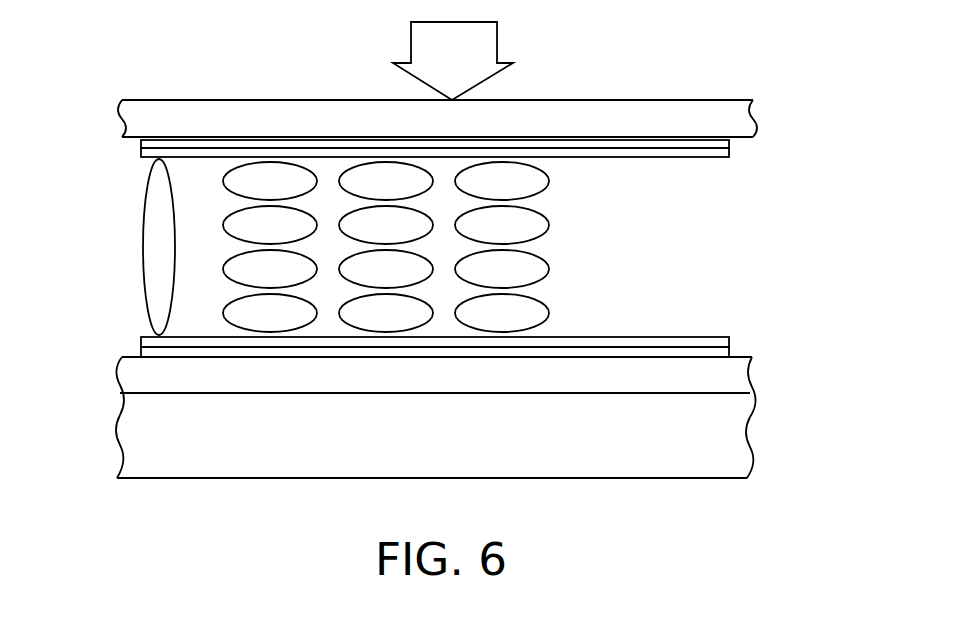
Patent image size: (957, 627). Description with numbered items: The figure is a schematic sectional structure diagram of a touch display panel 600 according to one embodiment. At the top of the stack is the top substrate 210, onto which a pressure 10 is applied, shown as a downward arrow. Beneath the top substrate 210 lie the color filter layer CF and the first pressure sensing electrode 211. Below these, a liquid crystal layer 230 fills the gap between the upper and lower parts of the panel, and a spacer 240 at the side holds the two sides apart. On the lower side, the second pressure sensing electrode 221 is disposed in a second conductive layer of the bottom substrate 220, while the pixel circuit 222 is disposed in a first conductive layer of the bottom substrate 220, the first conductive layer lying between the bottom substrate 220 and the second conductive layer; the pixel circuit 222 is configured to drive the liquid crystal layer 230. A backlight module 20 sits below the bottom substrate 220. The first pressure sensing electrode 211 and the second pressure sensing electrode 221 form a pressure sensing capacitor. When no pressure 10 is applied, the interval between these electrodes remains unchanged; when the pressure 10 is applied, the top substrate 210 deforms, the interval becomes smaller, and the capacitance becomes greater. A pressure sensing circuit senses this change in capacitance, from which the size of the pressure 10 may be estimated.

The pressure 10 is at (497, 43).
The top substrate 210 is at (753, 112).
The color filter layer CF is at (730, 143).
The first pressure sensing electrode 211 is at (730, 152).
The liquid crystal layer 230 is at (565, 163).
The spacer 240 is at (143, 256).
The second pressure sensing electrode 221 is at (729, 343).
The pixel circuit 222 is at (729, 352).
The bottom substrate 220 is at (752, 374).
The backlight module 20 is at (746, 434).
The touch display panel 600 is at (827, 63).